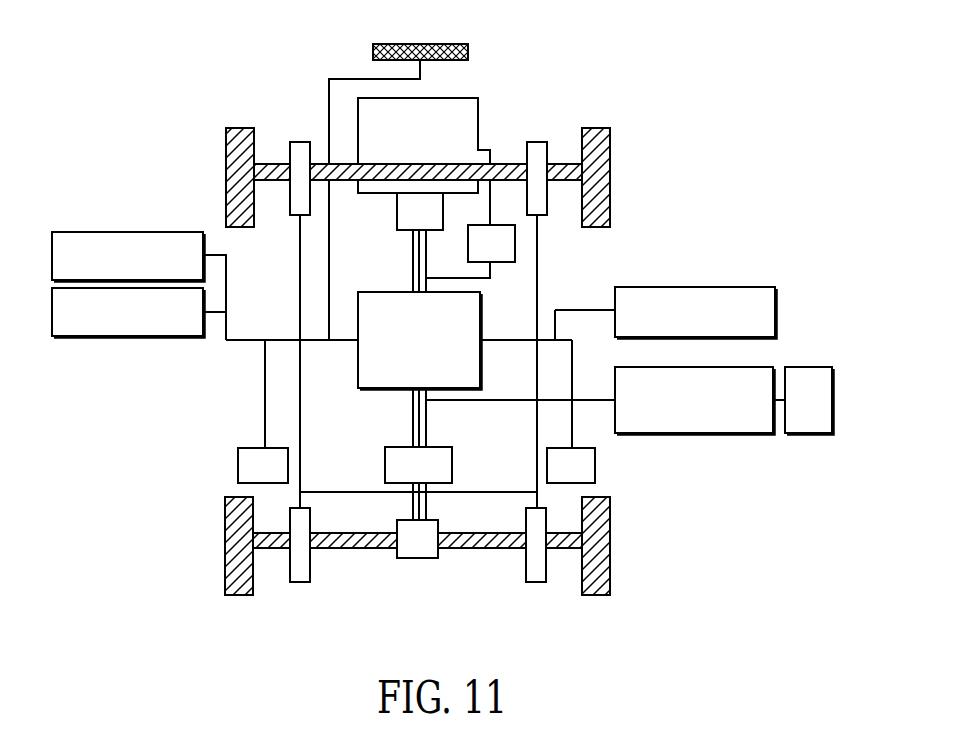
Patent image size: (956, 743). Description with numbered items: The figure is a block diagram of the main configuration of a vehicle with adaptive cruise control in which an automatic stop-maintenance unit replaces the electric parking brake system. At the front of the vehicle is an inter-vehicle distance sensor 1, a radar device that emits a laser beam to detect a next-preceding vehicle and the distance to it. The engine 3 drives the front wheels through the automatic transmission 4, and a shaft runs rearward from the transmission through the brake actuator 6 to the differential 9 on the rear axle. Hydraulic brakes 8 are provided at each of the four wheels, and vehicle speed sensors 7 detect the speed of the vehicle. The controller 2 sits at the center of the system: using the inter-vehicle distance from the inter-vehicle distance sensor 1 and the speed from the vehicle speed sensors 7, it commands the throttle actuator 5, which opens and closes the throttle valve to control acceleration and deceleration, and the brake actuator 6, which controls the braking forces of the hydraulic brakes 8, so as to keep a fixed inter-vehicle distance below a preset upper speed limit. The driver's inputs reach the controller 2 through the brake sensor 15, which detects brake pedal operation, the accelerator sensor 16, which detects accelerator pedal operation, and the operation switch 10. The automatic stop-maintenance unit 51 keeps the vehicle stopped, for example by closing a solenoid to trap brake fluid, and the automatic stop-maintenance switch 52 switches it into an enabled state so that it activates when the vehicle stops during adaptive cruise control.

The inter-vehicle distance sensor 1 is at (458, 45).
The controller 2 is at (368, 292).
The engine 3 is at (472, 98).
The automatic transmission 4 is at (397, 210).
The throttle actuator 5 is at (507, 263).
The brake actuator 6 is at (385, 465).
The vehicle speed sensor 7 is at (252, 447).
The hydraulic brake 8 is at (298, 141).
The differential 9 is at (420, 559).
The operation switch 10 is at (636, 287).
The brake sensor 15 is at (83, 337).
The accelerator sensor 16 is at (83, 232).
The automatic stop-maintenance unit 51 is at (695, 433).
The automatic stop-maintenance switch 52 is at (807, 433).